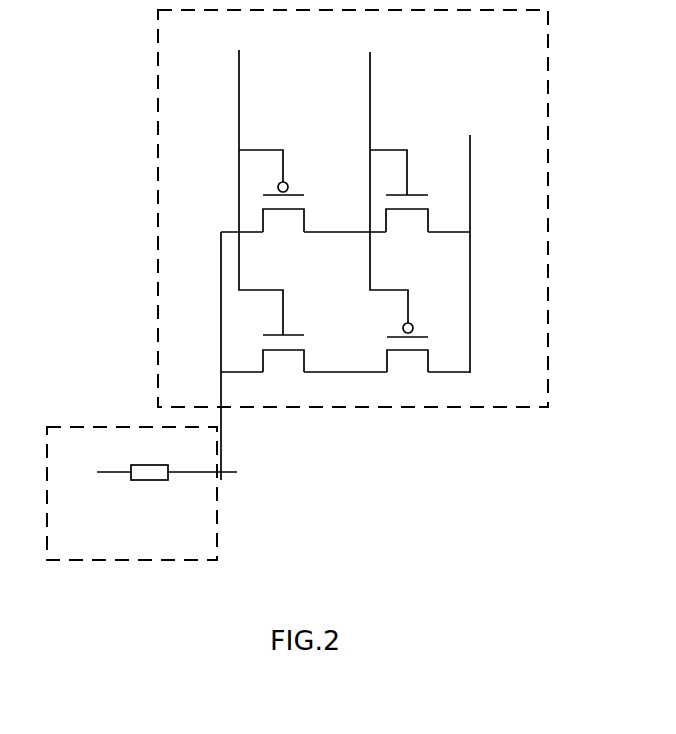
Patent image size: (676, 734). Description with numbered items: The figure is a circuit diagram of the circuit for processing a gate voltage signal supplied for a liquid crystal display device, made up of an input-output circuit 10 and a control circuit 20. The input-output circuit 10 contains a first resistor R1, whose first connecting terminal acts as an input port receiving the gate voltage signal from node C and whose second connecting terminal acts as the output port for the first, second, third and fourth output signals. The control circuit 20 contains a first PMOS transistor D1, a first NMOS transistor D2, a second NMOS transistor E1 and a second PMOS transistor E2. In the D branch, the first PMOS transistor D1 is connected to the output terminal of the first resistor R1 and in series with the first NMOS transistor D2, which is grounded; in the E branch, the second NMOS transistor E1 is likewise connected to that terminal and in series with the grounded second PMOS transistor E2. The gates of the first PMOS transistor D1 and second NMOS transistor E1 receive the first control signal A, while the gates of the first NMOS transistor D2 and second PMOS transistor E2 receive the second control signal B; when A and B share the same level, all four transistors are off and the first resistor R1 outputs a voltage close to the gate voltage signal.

The input-output circuit 10 is at (184, 494).
The control circuit 20 is at (353, 245).
The first resistor R1 is at (146, 458).
The first PMOS transistor D1 is at (283, 224).
The first NMOS transistor D2 is at (407, 230).
The second NMOS transistor E1 is at (283, 369).
The second PMOS transistor E2 is at (407, 363).